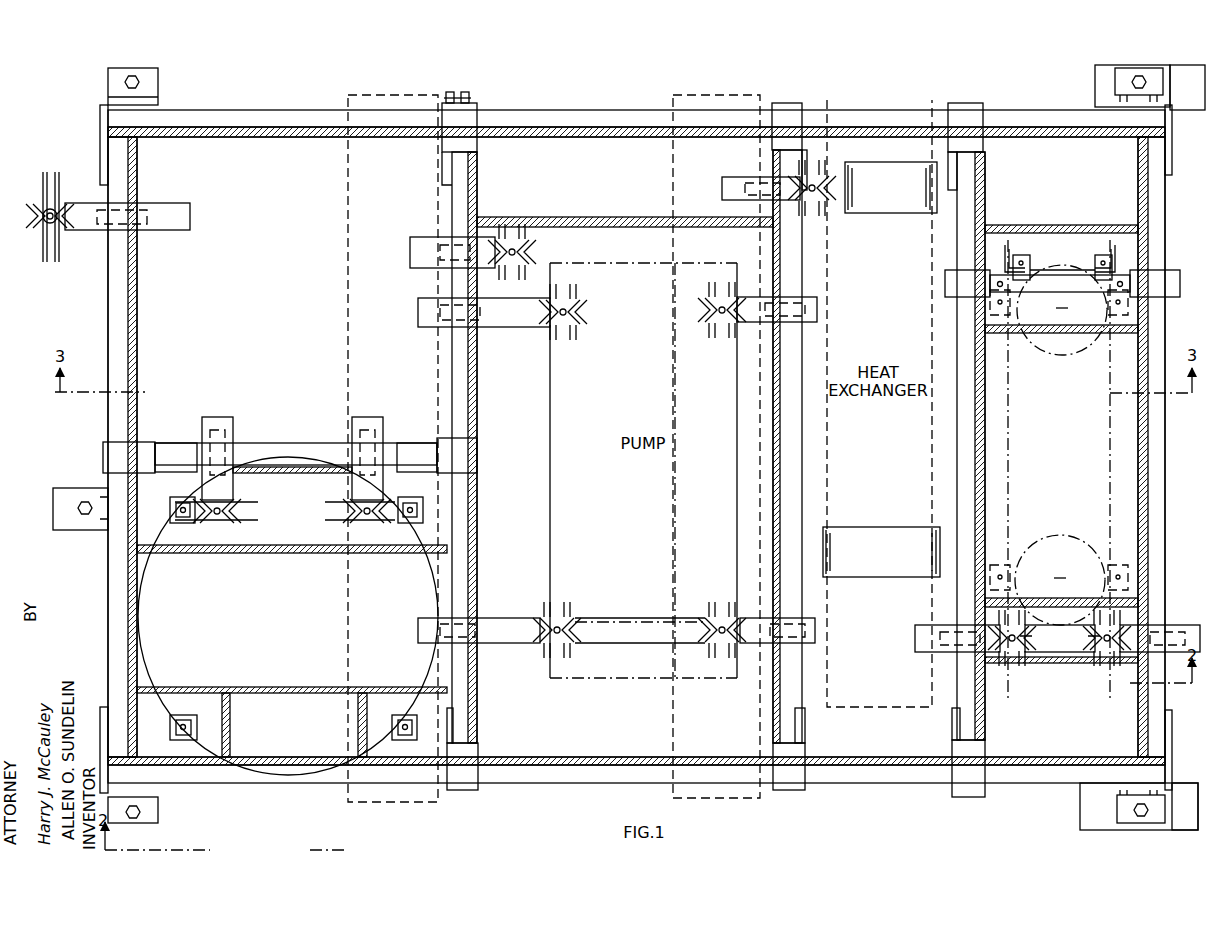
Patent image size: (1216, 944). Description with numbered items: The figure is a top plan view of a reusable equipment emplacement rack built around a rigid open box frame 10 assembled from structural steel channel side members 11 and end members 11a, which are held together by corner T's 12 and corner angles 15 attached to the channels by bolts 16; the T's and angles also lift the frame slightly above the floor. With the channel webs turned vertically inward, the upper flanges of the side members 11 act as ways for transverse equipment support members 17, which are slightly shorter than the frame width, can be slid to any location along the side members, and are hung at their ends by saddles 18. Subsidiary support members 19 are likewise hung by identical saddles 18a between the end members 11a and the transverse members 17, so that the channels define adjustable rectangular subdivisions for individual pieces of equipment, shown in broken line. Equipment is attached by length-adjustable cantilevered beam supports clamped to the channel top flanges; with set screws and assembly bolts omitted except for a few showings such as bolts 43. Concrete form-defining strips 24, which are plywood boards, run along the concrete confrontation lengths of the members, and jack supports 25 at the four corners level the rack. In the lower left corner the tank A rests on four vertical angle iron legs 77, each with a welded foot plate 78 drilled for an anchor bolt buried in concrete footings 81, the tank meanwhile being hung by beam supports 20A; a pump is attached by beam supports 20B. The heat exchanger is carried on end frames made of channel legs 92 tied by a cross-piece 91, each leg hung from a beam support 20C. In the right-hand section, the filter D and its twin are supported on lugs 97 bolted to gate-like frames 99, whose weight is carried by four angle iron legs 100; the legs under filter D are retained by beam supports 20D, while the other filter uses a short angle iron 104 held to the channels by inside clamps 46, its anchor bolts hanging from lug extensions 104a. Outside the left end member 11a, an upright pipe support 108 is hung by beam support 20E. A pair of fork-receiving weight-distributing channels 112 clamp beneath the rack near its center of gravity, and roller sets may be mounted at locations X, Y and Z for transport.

The box frame 10 is at (1033, 152).
The side member 11 is at (872, 118).
The end member 11a is at (112, 291).
The corner T 12 is at (130, 152).
The corner angle 15 is at (100, 120).
The bolt 16 is at (1140, 70).
The transverse equipment support member 17 is at (447, 352).
The saddle 18 is at (470, 118).
The saddle 18a is at (142, 442).
The subsidiary equipment support member 19 is at (292, 443).
The beam support 20A is at (217, 417).
The beam support 20B is at (425, 235).
The beam support 20C is at (742, 170).
The beam support 20D is at (925, 642).
The beam support 20E is at (195, 218).
The concrete form-defining strip 24 is at (312, 134).
The jack support 25 is at (162, 80).
The bolts 43 is at (465, 92).
The inside clamp 46 is at (948, 266).
The vertical angle iron leg 77 is at (175, 510).
The foot plate 78 is at (192, 520).
The concrete footing 81 is at (285, 553).
The cross-piece 91 is at (868, 562).
The channel leg 92 is at (915, 185).
The lug 97 is at (1000, 318).
The gate-like frame 99 is at (1108, 476).
The angle iron leg 100 is at (1010, 245).
The angle iron 104 is at (1050, 275).
The lug extension 104a is at (1035, 258).
The upright pipe support 108 is at (45, 224).
The weight-distributing channel 112 is at (415, 800).
The tank A is at (215, 625).
The filter D is at (1061, 444).
The roller set location X is at (1190, 80).
The roller set location Y is at (1190, 783).
The roller set location Z is at (60, 500).